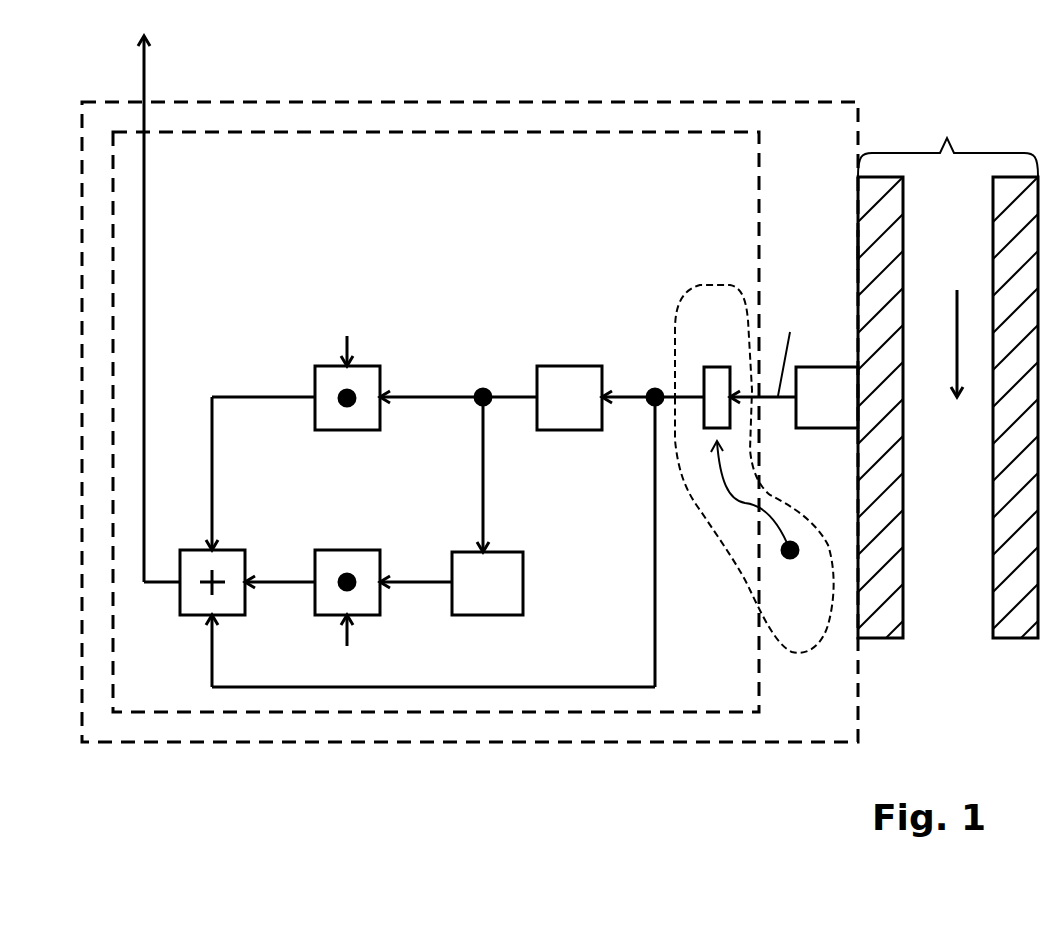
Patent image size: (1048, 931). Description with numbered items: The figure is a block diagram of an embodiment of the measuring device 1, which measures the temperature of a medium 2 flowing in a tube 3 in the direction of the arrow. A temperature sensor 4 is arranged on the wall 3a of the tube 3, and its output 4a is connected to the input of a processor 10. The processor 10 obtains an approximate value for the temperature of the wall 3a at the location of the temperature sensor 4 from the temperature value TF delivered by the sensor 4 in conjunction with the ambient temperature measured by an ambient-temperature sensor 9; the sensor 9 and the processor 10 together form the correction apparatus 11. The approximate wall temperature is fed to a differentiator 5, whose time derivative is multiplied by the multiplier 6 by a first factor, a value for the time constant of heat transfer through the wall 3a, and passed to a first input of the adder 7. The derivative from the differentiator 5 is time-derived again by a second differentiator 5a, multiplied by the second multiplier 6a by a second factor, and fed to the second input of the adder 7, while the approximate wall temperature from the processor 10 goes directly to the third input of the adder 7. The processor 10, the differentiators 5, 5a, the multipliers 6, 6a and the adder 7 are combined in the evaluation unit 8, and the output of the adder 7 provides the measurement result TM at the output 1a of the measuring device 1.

The measuring device 1 is at (562, 100).
The output 1a is at (140, 100).
The medium 2 is at (946, 343).
The tube 3 is at (947, 138).
The wall 3a is at (856, 250).
The temperature sensor 4 is at (828, 366).
The output 4a is at (789, 414).
The differentiator 5 is at (550, 364).
The second differentiator 5a is at (523, 575).
The multiplier 6 is at (368, 366).
The second multiplier 6a is at (348, 548).
The adder 7 is at (237, 548).
The evaluation unit 8 is at (438, 132).
The ambient-temperature sensor 9 is at (791, 566).
The processor 10 is at (722, 366).
The correction apparatus 11 is at (678, 313).